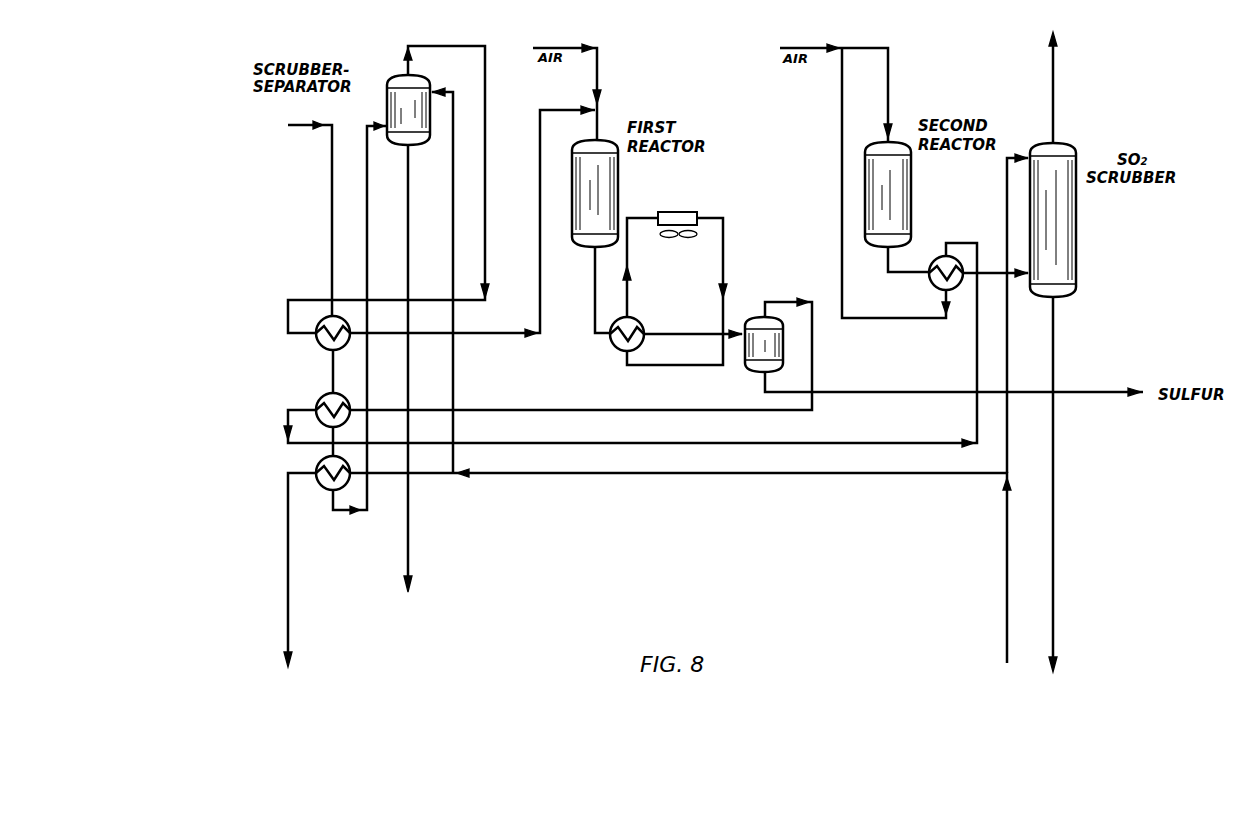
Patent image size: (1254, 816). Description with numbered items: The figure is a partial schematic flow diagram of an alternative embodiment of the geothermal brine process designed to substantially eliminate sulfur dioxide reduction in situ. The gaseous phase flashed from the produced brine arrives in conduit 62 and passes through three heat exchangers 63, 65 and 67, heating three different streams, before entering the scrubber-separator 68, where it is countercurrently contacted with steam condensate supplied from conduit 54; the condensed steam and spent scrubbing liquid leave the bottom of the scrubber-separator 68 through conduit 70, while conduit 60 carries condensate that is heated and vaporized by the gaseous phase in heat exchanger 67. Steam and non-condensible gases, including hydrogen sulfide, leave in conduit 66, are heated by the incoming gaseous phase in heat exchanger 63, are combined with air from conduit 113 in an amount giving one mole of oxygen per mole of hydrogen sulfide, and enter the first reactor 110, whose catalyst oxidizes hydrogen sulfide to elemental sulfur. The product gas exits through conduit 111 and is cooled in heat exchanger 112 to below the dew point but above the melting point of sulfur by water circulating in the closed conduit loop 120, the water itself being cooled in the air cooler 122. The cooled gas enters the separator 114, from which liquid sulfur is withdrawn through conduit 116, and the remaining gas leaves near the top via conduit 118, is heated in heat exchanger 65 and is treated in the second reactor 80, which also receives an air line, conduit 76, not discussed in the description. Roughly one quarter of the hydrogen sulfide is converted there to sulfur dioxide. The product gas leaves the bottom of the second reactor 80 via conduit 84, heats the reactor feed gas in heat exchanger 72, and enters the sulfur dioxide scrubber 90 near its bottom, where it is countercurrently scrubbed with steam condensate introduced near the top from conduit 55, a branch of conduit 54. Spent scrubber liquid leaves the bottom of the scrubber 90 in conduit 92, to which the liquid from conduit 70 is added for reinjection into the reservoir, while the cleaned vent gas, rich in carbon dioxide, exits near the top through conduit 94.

The conduit 54 is at (746, 478).
The conduit 55 is at (1006, 206).
The conduit 60 is at (288, 559).
The conduit 62 is at (306, 128).
The heat exchanger 63 is at (320, 345).
The heat exchanger 65 is at (320, 404).
The conduit 66 is at (466, 46).
The heat exchanger 67 is at (325, 488).
The scrubber-separator 68 is at (414, 145).
The conduit 70 is at (421, 550).
The heat exchanger 72 is at (930, 290).
The air line 76 is at (852, 47).
The second reactor 80 is at (890, 203).
The conduit 84 is at (888, 264).
The sulfur dioxide scrubber 90 is at (1076, 233).
The conduit 92 is at (1055, 528).
The conduit 94 is at (1059, 98).
The first reactor 110 is at (603, 183).
The conduit 111 is at (593, 290).
The heat exchanger 112 is at (619, 348).
The conduit 113 is at (545, 48).
The separator 114 is at (760, 376).
The conduit 116 is at (903, 391).
The conduit 118 is at (765, 302).
The closed conduit loop 120 is at (723, 263).
The air cooler 122 is at (671, 212).